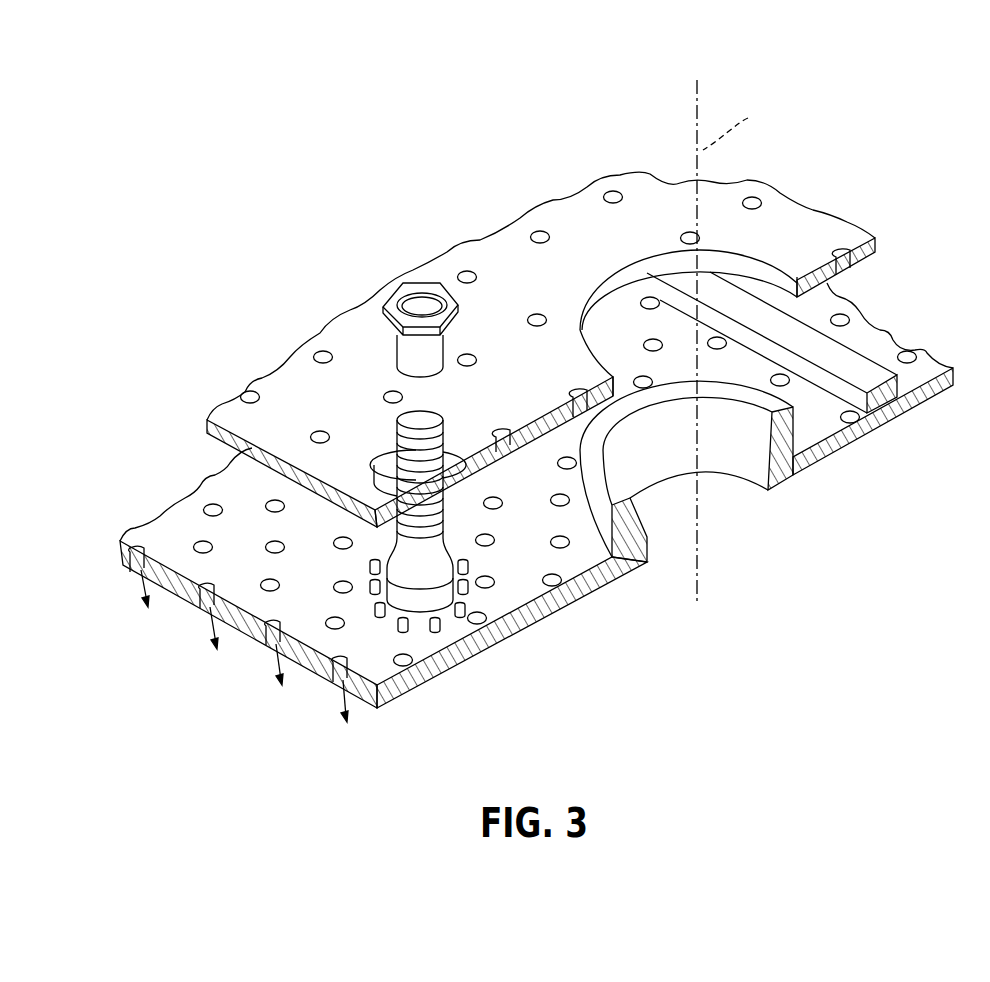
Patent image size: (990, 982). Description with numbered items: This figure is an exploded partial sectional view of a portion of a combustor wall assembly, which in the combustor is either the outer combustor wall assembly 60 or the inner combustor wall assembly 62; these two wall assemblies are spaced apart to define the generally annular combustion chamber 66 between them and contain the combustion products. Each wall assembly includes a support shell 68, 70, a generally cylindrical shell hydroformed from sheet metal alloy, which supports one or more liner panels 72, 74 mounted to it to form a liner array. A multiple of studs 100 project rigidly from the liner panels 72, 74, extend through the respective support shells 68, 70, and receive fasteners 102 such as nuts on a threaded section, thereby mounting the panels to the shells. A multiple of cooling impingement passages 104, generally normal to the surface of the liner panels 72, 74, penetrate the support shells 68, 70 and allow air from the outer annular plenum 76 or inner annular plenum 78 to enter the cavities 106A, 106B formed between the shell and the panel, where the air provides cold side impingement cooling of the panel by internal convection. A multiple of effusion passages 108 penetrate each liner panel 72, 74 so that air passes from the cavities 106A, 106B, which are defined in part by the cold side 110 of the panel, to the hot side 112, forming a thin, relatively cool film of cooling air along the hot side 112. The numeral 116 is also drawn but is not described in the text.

The outer combustor wall assembly 60 is at (536, 378).
The inner combustor wall assembly 62 is at (902, 133).
The combustion chamber 66 is at (789, 634).
The support shell 68 is at (586, 310).
The support shell 70 is at (805, 190).
The liner panel 72 is at (806, 401).
The liner panel 74 is at (893, 450).
The outer annular plenum 76 is at (377, 368).
The inner annular plenum 78 is at (299, 230).
The stud 100 is at (396, 445).
The fastener 102 is at (421, 284).
The cooling impingement passage 104 is at (540, 232).
The cavity 106A is at (446, 542).
The cavity 106B is at (176, 462).
The effusion passage 108 is at (906, 351).
The cold side 110 is at (497, 600).
The hot side 112 is at (478, 652).
The collar opening 116 is at (713, 494).